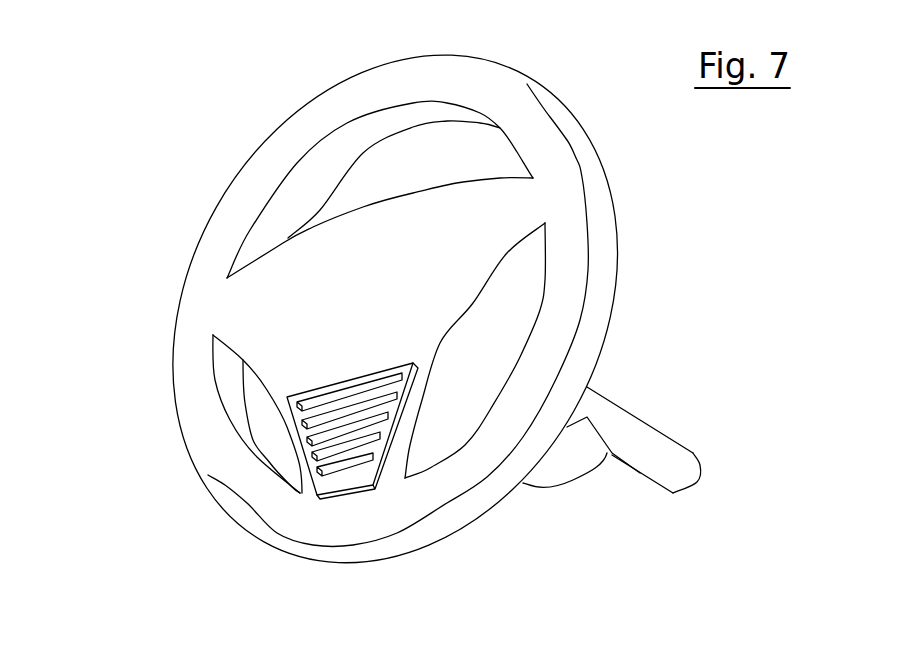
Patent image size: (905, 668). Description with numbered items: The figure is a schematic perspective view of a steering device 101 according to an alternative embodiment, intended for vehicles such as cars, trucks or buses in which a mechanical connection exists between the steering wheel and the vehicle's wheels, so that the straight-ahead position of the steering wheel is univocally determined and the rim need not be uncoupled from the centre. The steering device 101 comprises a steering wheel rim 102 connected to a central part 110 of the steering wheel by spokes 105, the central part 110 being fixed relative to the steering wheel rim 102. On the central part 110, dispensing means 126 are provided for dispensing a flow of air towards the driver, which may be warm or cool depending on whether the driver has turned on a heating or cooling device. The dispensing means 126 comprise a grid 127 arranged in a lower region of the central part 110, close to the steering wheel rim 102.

The steering device 101 is at (127, 67).
The steering wheel rim 102 is at (498, 100).
The spokes 105 is at (237, 263).
The central part 110 is at (347, 260).
The dispensing means 126 is at (268, 518).
The grid 127 is at (353, 477).